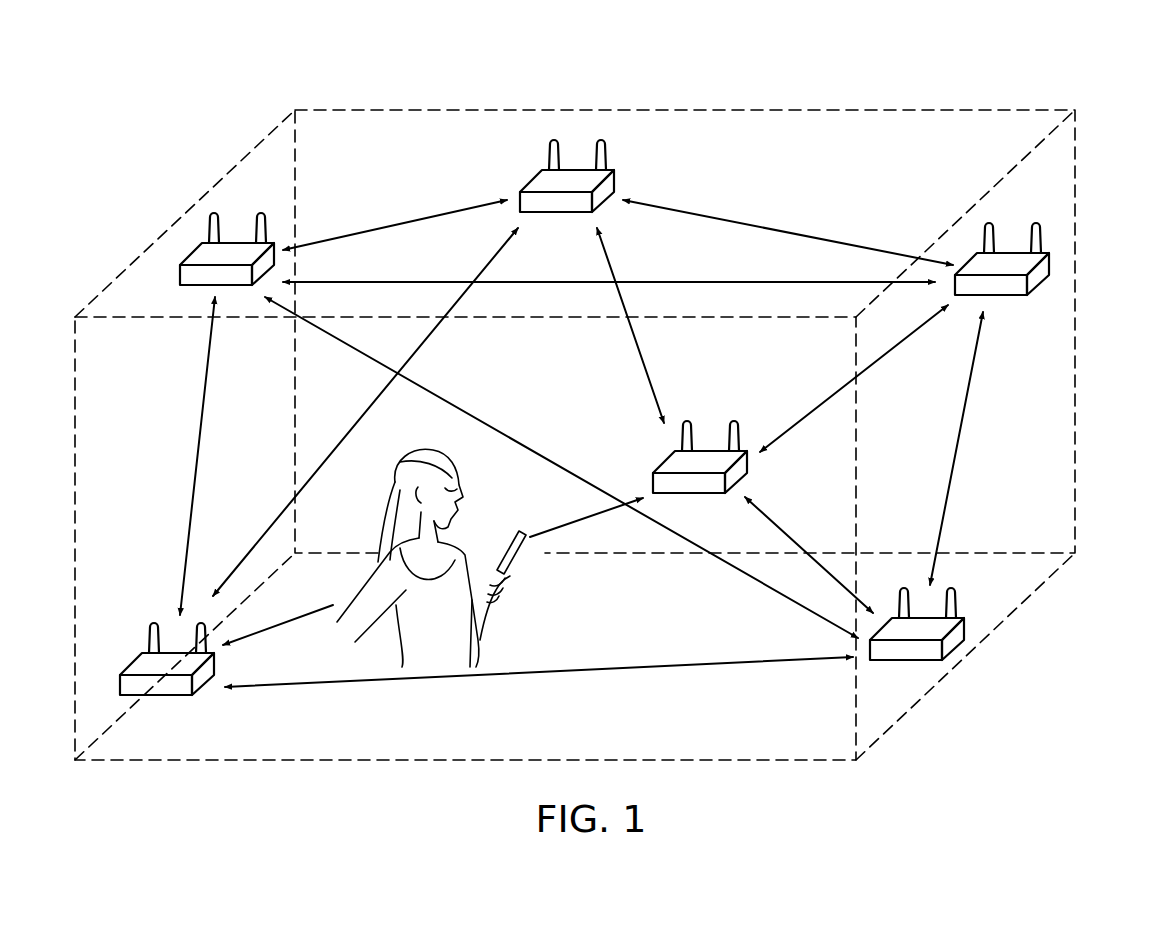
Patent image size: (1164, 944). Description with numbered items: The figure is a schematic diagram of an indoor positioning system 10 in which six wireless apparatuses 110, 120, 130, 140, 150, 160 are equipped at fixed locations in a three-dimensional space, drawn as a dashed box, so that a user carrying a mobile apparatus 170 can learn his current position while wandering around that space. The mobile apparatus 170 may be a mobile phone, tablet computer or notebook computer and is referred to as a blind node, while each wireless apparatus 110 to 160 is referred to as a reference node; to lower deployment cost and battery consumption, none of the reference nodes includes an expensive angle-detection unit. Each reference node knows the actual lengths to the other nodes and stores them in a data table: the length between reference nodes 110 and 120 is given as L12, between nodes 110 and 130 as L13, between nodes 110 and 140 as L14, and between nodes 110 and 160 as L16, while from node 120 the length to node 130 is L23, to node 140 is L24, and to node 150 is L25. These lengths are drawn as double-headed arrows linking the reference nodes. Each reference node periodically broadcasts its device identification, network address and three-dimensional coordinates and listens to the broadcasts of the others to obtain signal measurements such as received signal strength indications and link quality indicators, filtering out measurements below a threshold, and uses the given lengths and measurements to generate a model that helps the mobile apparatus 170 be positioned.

The indoor positioning system 10 is at (840, 93).
The wireless apparatus 110 is at (190, 255).
The wireless apparatus 120 is at (525, 186).
The wireless apparatus 130 is at (1037, 272).
The wireless apparatus 140 is at (132, 665).
The wireless apparatus 150 is at (705, 452).
The wireless apparatus 160 is at (955, 645).
The mobile apparatus 170 is at (502, 540).
The length between reference nodes 110 and 120 L12 is at (385, 227).
The length between reference nodes 110 and 130 L13 is at (368, 281).
The length between reference nodes 110 and 140 L14 is at (193, 461).
The length between reference nodes 110 and 160 L16 is at (468, 412).
The length between reference nodes 120 and 130 L23 is at (787, 230).
The length between reference nodes 120 and 140 L24 is at (272, 523).
The length between reference nodes 120 and 150 L25 is at (640, 350).